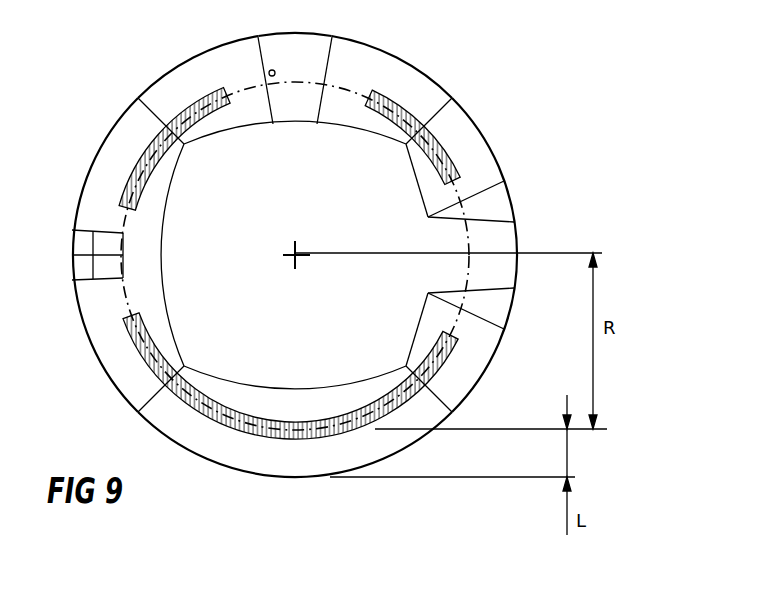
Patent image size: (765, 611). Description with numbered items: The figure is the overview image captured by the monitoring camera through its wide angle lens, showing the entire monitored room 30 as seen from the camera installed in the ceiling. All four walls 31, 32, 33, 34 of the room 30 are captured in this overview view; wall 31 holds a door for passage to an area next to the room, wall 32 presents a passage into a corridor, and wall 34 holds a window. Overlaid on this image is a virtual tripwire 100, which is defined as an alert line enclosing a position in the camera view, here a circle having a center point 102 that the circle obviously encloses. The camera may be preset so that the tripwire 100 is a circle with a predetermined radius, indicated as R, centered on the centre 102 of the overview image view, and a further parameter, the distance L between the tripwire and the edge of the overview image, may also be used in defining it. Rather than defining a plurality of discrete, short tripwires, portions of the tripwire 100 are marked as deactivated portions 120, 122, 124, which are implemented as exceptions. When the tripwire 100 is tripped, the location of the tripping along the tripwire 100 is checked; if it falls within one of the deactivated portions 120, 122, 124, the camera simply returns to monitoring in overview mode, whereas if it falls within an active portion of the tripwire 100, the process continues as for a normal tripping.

The room 30 is at (304, 224).
The wall 31 is at (170, 87).
The wall 32 is at (477, 152).
The wall 33 is at (222, 458).
The wall 34 is at (108, 318).
The virtual tripwire 100 is at (128, 300).
The center point 102 is at (297, 253).
The deactivated portion 120 is at (203, 130).
The deactivated portion 122 is at (383, 117).
The deactivated portion 124 is at (207, 393).